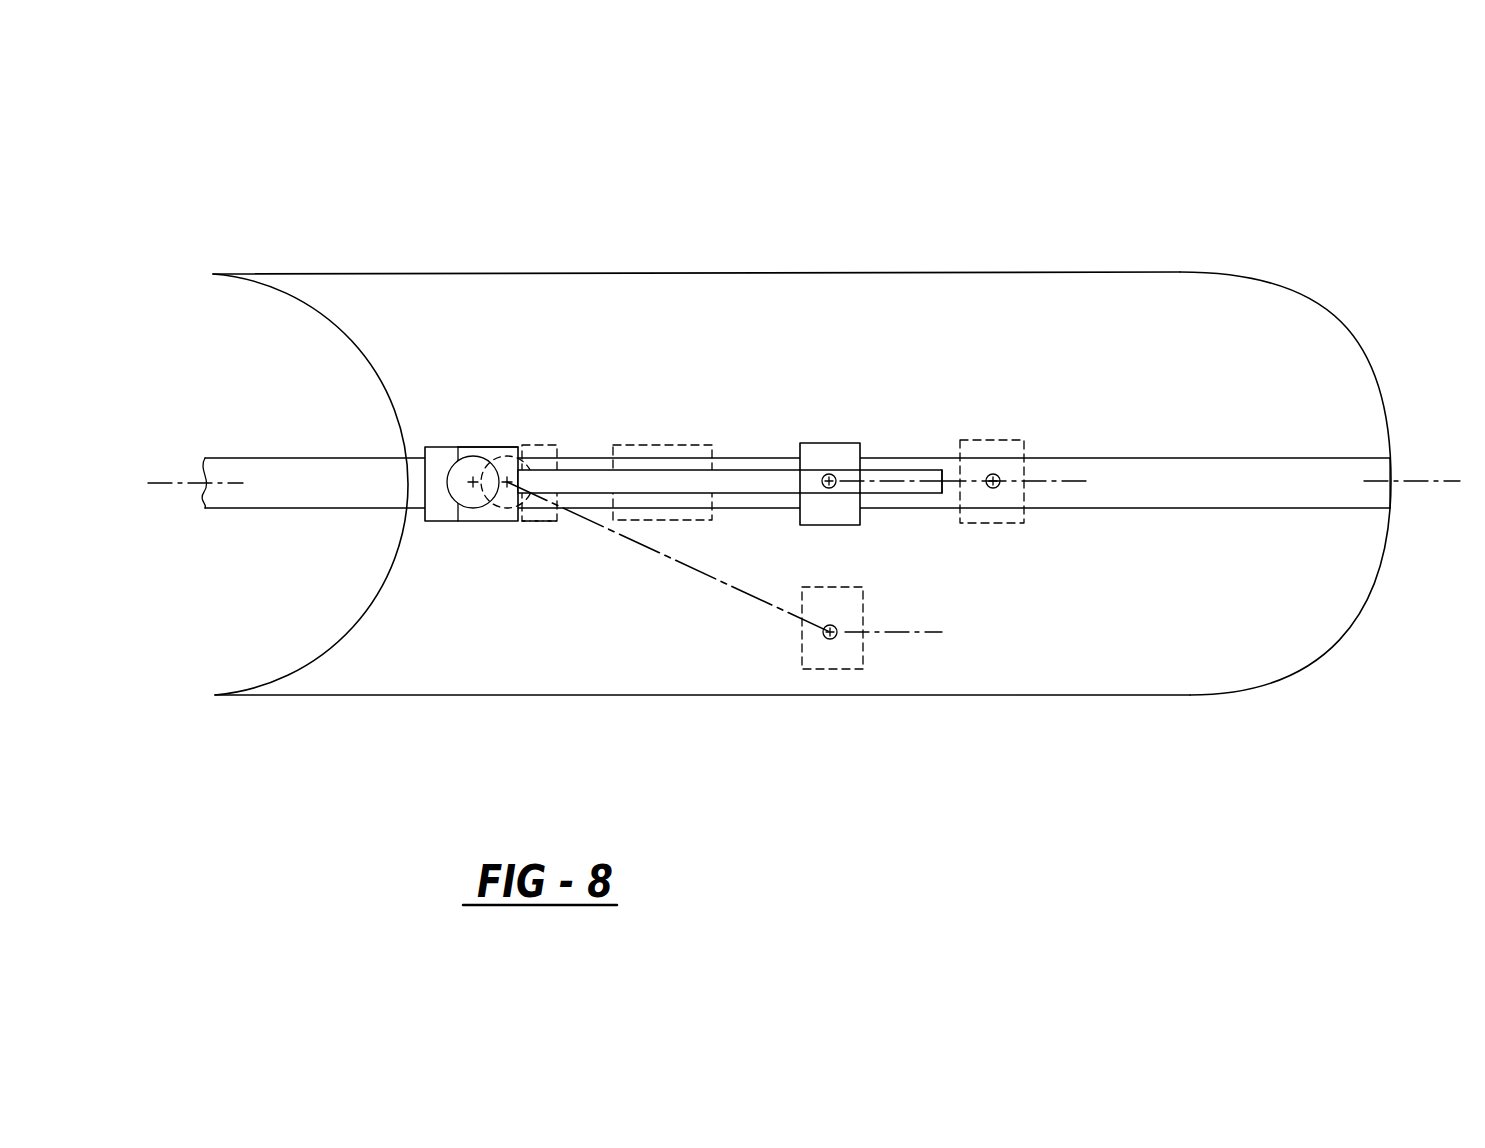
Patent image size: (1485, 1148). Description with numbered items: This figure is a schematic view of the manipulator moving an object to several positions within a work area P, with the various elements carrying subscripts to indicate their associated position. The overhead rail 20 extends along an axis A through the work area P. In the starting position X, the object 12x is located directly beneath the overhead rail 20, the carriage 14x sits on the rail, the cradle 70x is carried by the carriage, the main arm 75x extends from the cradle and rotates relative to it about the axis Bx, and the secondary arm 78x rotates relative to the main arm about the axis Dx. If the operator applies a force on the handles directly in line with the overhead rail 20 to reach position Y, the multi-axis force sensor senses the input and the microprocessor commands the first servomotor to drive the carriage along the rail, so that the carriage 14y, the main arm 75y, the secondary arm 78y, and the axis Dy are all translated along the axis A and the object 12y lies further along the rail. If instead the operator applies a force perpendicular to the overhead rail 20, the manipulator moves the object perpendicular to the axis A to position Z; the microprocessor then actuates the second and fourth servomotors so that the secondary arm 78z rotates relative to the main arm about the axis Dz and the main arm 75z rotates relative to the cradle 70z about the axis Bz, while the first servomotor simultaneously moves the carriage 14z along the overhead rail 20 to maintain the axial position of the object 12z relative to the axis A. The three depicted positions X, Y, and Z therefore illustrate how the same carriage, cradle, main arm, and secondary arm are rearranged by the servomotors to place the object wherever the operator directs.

The work area P is at (1030, 272).
The axis A is at (1447, 481).
The overhead rail 20 is at (236, 510).
The cradle in position X 70x is at (452, 513).
The cradle in position Z 70z is at (543, 447).
The axis B in position X Bx is at (477, 477).
The axis B in position Z Bz is at (508, 490).
The carriage in position X 14x is at (465, 447).
The carriage in position Y 14y is at (655, 445).
The carriage in position Z 14z is at (555, 523).
The main arm in position X 75x is at (700, 469).
The main arm in position Y 75y is at (947, 481).
The main arm in position Z 75z is at (715, 583).
The object in position X 12x is at (822, 443).
The object in position Y 12y is at (1005, 440).
The object in position Z 12z is at (797, 600).
The axis D in position X Dx is at (836, 478).
The axis D in position Y Dy is at (996, 488).
The axis D in position Z Dz is at (833, 640).
The secondary arm in position X 78x is at (893, 484).
The secondary arm in position Y 78y is at (1072, 481).
The secondary arm in position Z 78z is at (927, 634).
The position X is at (790, 432).
The position Y is at (1028, 610).
The position Z is at (775, 668).